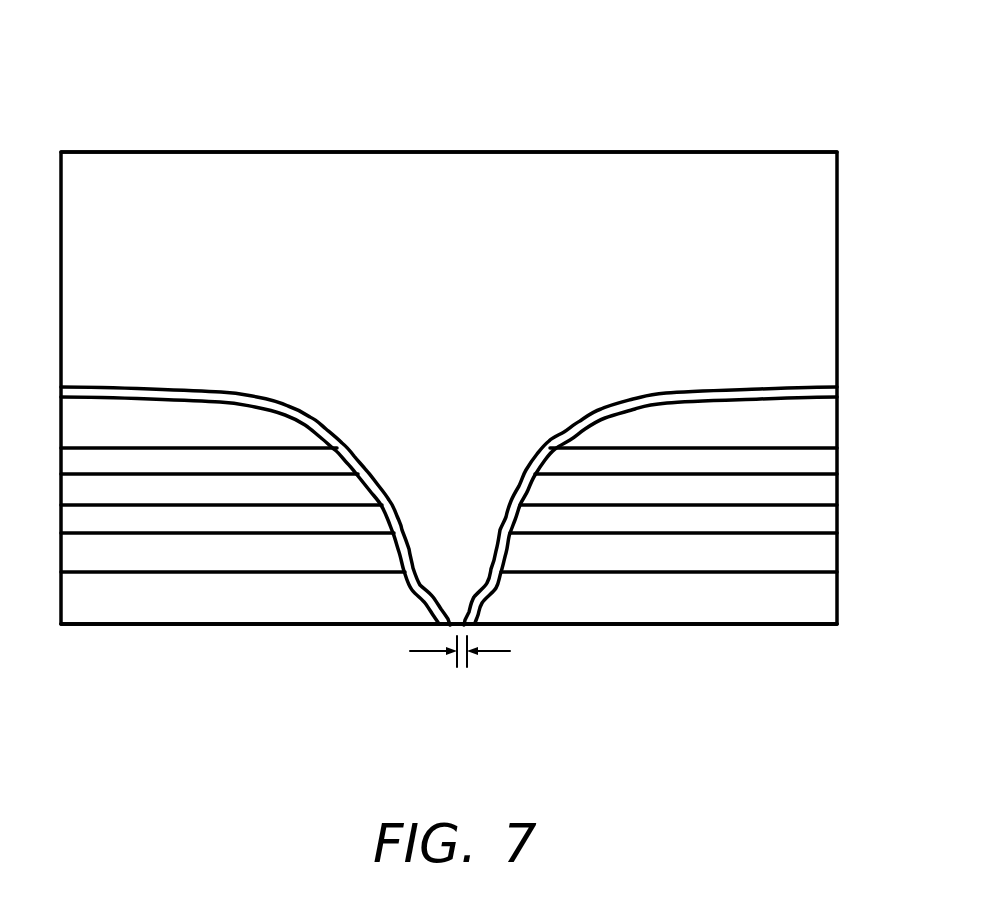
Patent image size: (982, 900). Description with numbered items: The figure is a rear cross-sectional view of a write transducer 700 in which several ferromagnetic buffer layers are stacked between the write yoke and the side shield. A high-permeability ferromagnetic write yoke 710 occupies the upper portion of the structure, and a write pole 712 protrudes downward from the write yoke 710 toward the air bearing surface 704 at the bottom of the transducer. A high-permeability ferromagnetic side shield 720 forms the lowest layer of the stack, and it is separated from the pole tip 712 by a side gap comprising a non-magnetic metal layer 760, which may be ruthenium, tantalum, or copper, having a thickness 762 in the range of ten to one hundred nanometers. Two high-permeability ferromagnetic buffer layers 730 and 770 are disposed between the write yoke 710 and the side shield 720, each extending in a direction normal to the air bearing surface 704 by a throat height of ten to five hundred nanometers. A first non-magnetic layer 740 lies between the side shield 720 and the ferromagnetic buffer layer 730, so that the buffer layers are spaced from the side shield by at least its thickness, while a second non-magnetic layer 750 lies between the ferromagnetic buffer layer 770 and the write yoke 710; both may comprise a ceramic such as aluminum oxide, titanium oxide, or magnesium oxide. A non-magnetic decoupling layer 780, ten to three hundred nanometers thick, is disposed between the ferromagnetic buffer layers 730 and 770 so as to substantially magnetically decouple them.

The write transducer 700 is at (638, 88).
The write yoke 710 is at (186, 283).
The write pole 712 is at (473, 585).
The side shield 720 is at (189, 612).
The ferromagnetic buffer layer 730 is at (178, 517).
The first non-magnetic layer 740 is at (192, 565).
The second non-magnetic layer 750 is at (189, 438).
The non-magnetic metal layer 760 is at (317, 423).
The thickness 762 is at (488, 651).
The ferromagnetic buffer layer 770 is at (175, 458).
The non-magnetic decoupling layer 780 is at (189, 502).
The air bearing surface 704 is at (308, 625).